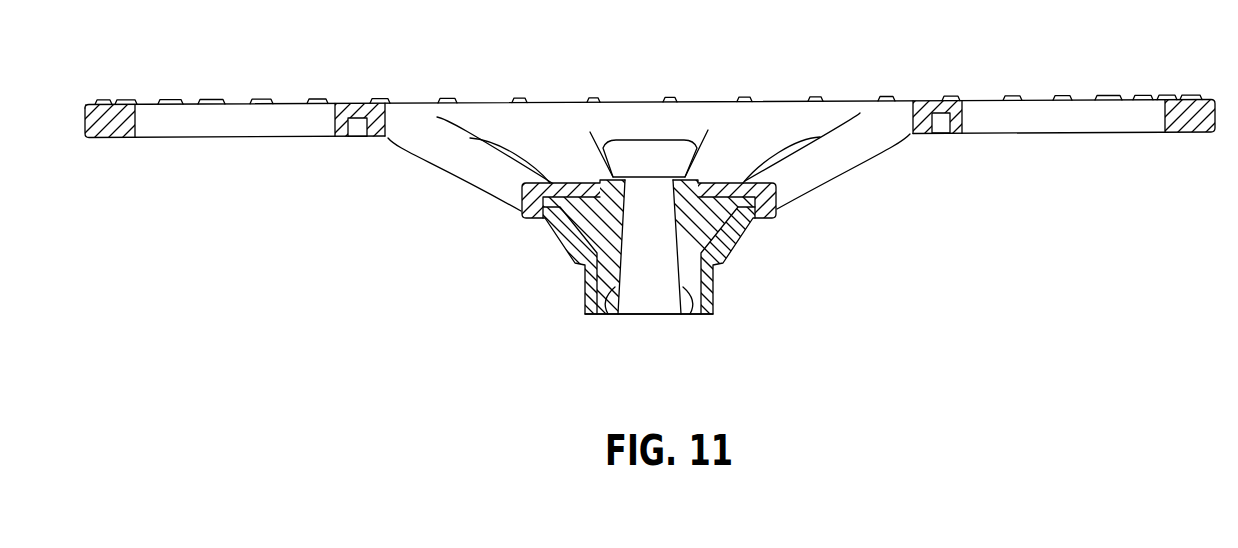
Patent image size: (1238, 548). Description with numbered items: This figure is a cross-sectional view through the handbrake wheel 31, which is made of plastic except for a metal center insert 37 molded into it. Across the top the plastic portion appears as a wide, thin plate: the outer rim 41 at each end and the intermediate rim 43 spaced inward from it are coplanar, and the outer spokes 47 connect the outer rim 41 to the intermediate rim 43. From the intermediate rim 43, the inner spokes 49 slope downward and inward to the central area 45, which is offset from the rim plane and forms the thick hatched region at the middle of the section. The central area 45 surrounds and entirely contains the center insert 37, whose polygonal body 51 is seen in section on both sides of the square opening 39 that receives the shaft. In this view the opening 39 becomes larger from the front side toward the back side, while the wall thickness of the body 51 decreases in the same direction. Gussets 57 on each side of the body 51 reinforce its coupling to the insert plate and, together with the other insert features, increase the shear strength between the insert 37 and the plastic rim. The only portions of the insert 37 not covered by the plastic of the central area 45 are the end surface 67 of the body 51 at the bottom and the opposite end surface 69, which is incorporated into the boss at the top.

The handbrake wheel 31 is at (417, 117).
The outer rim 41 is at (110, 120).
The intermediate rim 43 is at (323, 118).
The outer spokes 47 is at (253, 128).
The inner spokes 49 is at (443, 152).
The central area 45 is at (521, 216).
The gussets 57 is at (730, 227).
The center insert 37 is at (607, 281).
The square opening 39 is at (610, 296).
The end surface 67 is at (690, 305).
The polygonal body 51 is at (712, 282).
The end surface 69 is at (628, 207).